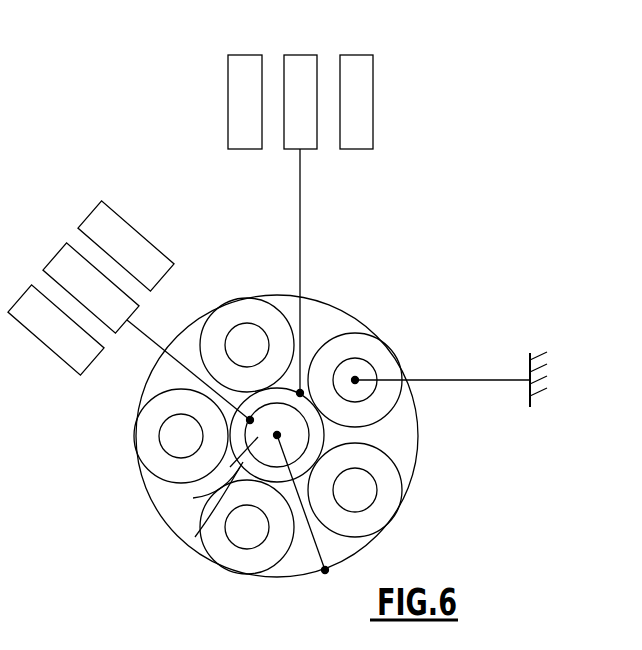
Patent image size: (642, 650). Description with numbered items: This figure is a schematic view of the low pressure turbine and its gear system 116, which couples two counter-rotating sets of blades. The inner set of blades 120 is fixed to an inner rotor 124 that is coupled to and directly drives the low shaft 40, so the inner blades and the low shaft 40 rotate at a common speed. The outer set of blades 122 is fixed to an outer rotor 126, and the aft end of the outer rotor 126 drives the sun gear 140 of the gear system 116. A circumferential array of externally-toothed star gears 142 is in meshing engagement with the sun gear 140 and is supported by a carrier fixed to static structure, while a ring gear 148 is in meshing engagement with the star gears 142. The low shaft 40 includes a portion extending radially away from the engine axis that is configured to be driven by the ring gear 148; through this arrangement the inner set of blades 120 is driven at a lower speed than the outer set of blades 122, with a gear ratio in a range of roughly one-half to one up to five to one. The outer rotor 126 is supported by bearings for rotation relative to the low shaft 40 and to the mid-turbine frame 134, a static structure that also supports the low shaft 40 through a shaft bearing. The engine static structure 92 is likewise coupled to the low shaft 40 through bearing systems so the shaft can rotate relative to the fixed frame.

The low shaft 40 is at (193, 498).
The engine static structure 92 is at (558, 350).
The gear system 116 is at (388, 272).
The inner set of blades 120 is at (148, 225).
The outer set of blades 122 is at (380, 85).
The inner rotor 124 is at (150, 333).
The outer rotor 126 is at (300, 205).
The mid-turbine frame 134 is at (530, 397).
The sun gear 140 is at (243, 462).
The star gears 142 is at (262, 315).
The ring gear 148 is at (310, 295).